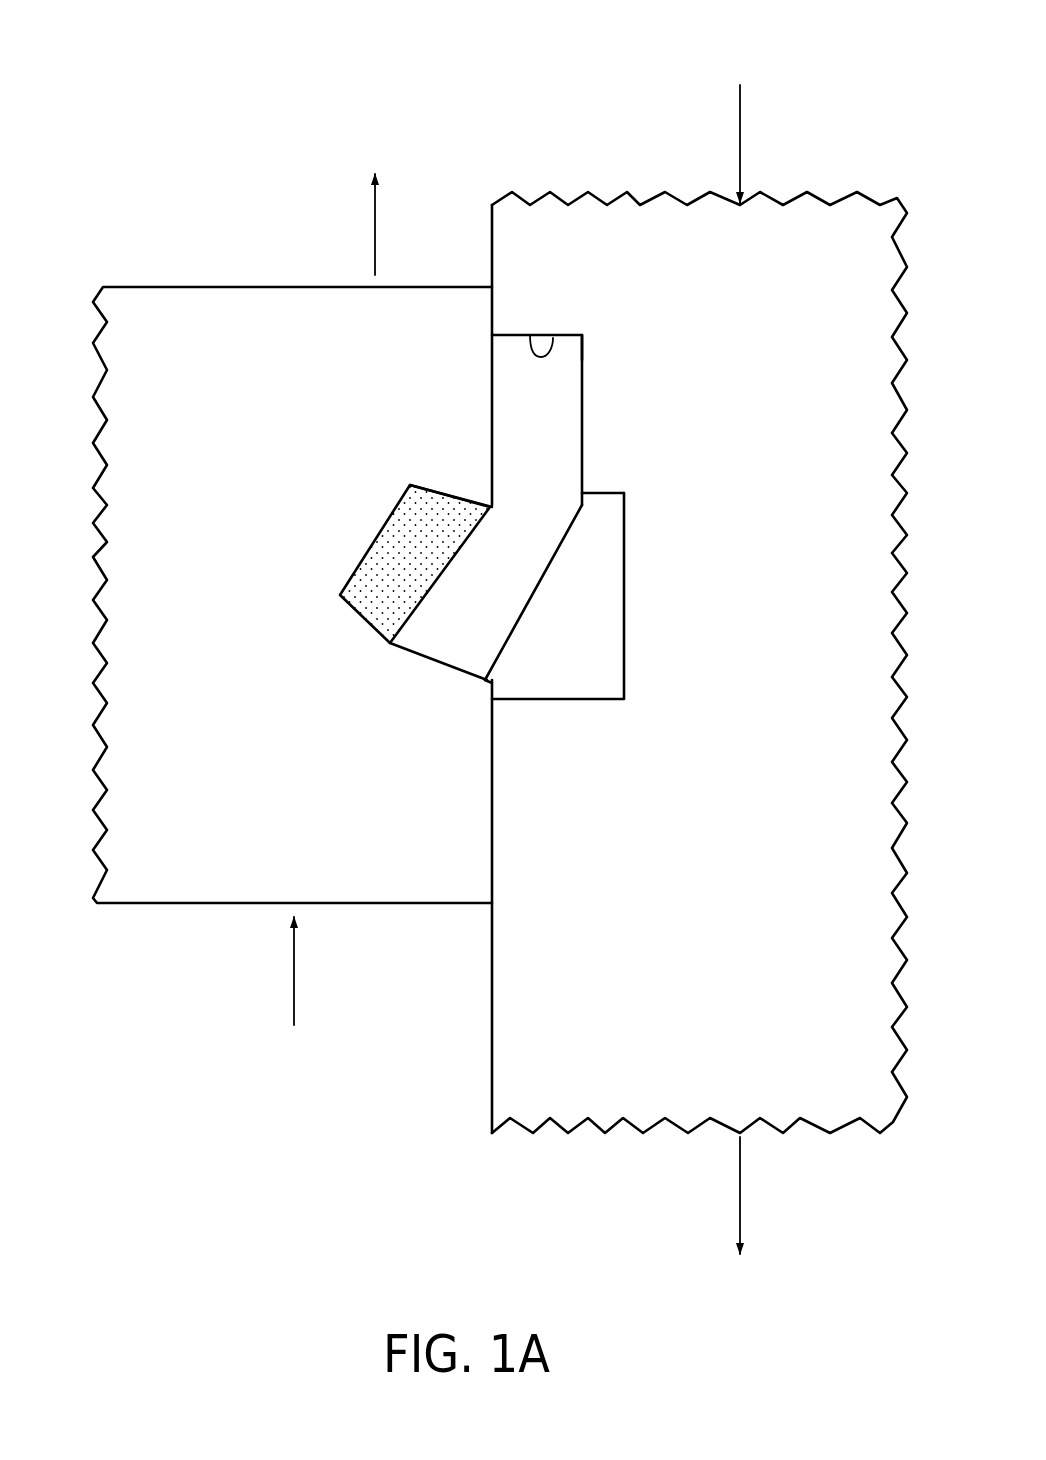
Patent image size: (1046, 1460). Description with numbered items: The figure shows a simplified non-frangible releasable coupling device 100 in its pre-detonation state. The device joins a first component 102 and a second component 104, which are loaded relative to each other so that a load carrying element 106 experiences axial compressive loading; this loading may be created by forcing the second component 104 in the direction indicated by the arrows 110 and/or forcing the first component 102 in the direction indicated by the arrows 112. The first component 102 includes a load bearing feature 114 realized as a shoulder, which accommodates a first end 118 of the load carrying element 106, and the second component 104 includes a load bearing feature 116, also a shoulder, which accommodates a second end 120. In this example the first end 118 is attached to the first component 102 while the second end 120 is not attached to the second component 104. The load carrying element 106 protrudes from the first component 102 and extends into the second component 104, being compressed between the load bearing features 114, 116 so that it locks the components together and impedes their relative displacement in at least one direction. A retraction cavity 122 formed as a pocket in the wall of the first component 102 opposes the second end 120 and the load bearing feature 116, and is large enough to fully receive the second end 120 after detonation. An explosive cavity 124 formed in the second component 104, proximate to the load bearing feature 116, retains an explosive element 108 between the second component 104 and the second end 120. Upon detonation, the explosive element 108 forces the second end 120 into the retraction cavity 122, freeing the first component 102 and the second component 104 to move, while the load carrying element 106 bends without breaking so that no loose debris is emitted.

The non-frangible releasable coupling device 100 is at (242, 113).
The first component 102 is at (618, 208).
The second component 104 is at (259, 287).
The load carrying element 106 is at (583, 418).
The explosive element 108 is at (377, 585).
The arrows 110 is at (376, 226).
The arrows 112 is at (741, 123).
The load bearing feature 114 is at (553, 338).
The load bearing feature 116 is at (436, 660).
The first end 118 is at (566, 362).
The second end 120 is at (475, 647).
The retraction cavity 122 is at (613, 582).
The explosive cavity 124 is at (400, 498).